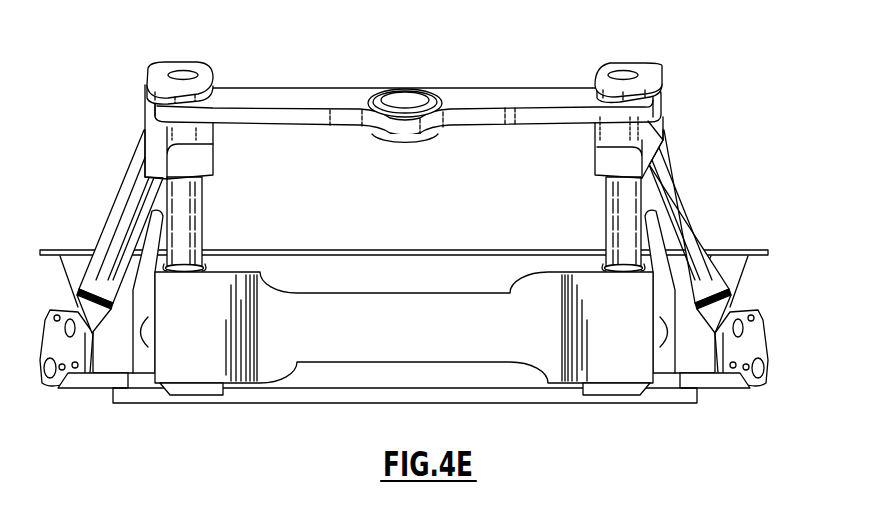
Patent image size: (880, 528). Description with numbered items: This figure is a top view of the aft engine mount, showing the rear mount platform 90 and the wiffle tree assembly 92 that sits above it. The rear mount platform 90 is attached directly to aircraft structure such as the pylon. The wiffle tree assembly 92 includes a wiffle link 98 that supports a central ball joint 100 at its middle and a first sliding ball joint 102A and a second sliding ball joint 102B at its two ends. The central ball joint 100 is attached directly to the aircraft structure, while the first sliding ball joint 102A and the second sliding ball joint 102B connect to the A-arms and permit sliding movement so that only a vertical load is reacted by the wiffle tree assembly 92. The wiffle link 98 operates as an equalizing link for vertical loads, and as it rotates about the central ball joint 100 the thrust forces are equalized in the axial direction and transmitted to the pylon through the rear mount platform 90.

The rear mount platform 90 is at (448, 343).
The wiffle tree assembly 92 is at (417, 99).
The wiffle link 98 is at (303, 100).
The central ball joint 100 is at (412, 89).
The first sliding ball joint 102A is at (663, 84).
The second sliding ball joint 102B is at (163, 93).